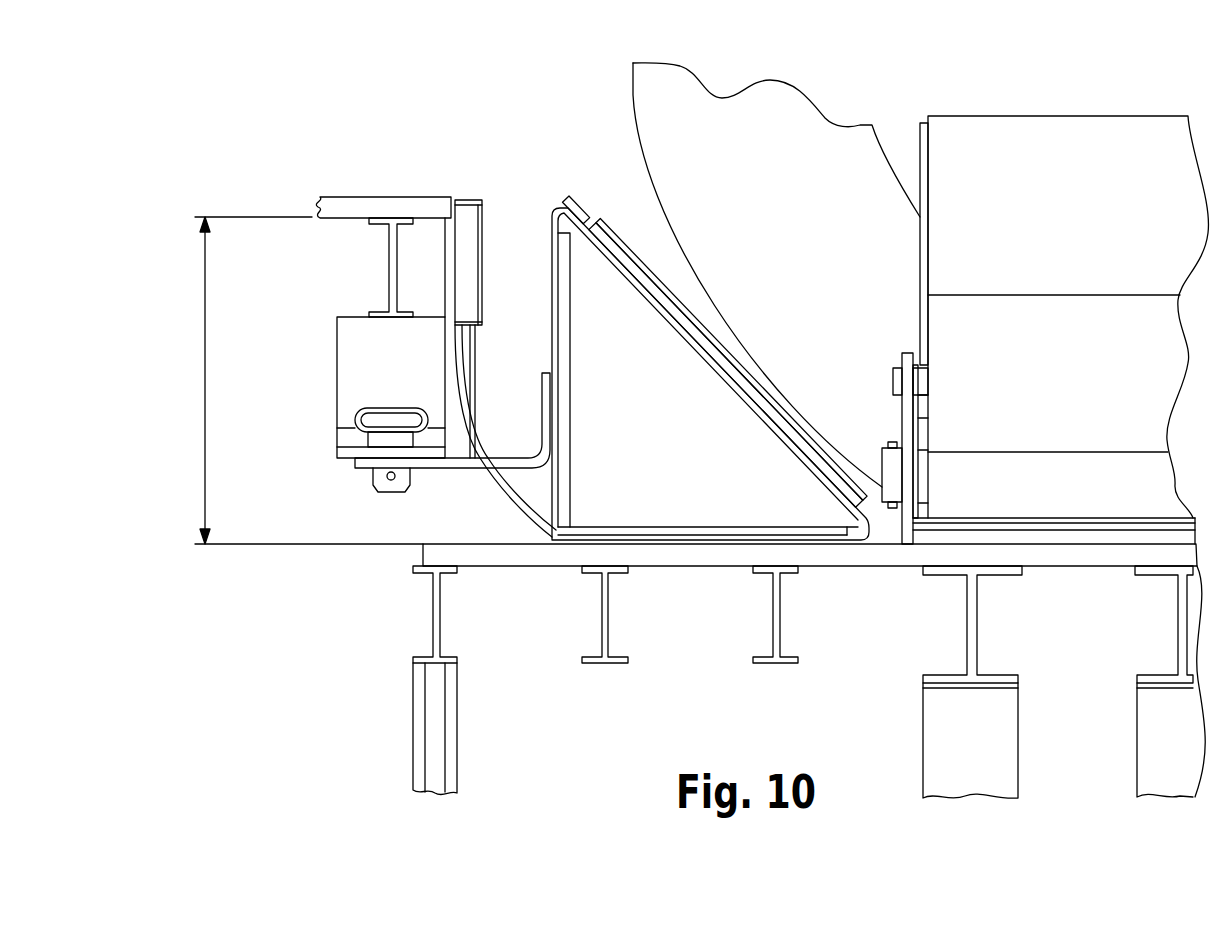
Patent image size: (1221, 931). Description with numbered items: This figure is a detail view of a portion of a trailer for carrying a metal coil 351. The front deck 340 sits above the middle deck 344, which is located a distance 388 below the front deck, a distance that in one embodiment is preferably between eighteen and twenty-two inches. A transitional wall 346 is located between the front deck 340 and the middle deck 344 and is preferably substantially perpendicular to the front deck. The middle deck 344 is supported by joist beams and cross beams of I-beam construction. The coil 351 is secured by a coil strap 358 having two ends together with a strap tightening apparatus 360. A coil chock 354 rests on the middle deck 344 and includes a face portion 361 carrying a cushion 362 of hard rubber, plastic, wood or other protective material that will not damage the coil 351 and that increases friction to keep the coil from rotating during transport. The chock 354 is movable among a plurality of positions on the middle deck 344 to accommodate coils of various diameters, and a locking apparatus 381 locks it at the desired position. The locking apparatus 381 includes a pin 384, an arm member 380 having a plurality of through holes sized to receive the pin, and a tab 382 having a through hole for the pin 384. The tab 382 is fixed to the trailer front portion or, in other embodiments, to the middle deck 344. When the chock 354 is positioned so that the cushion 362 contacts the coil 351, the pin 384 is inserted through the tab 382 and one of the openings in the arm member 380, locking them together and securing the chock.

The front deck 340 is at (365, 197).
The middle deck 344 is at (887, 545).
The transitional wall 346 is at (503, 497).
The coil 351 is at (632, 92).
The coil chock 354 is at (548, 308).
The coil strap 358 is at (987, 115).
The strap tightening apparatus 360 is at (893, 418).
The face portion 361 is at (583, 213).
The cushion 362 is at (618, 228).
The arm member 380 is at (433, 468).
The locking apparatus 381 is at (373, 362).
The tab 382 is at (337, 435).
The pin 384 is at (381, 408).
The distance 388 is at (305, 380).